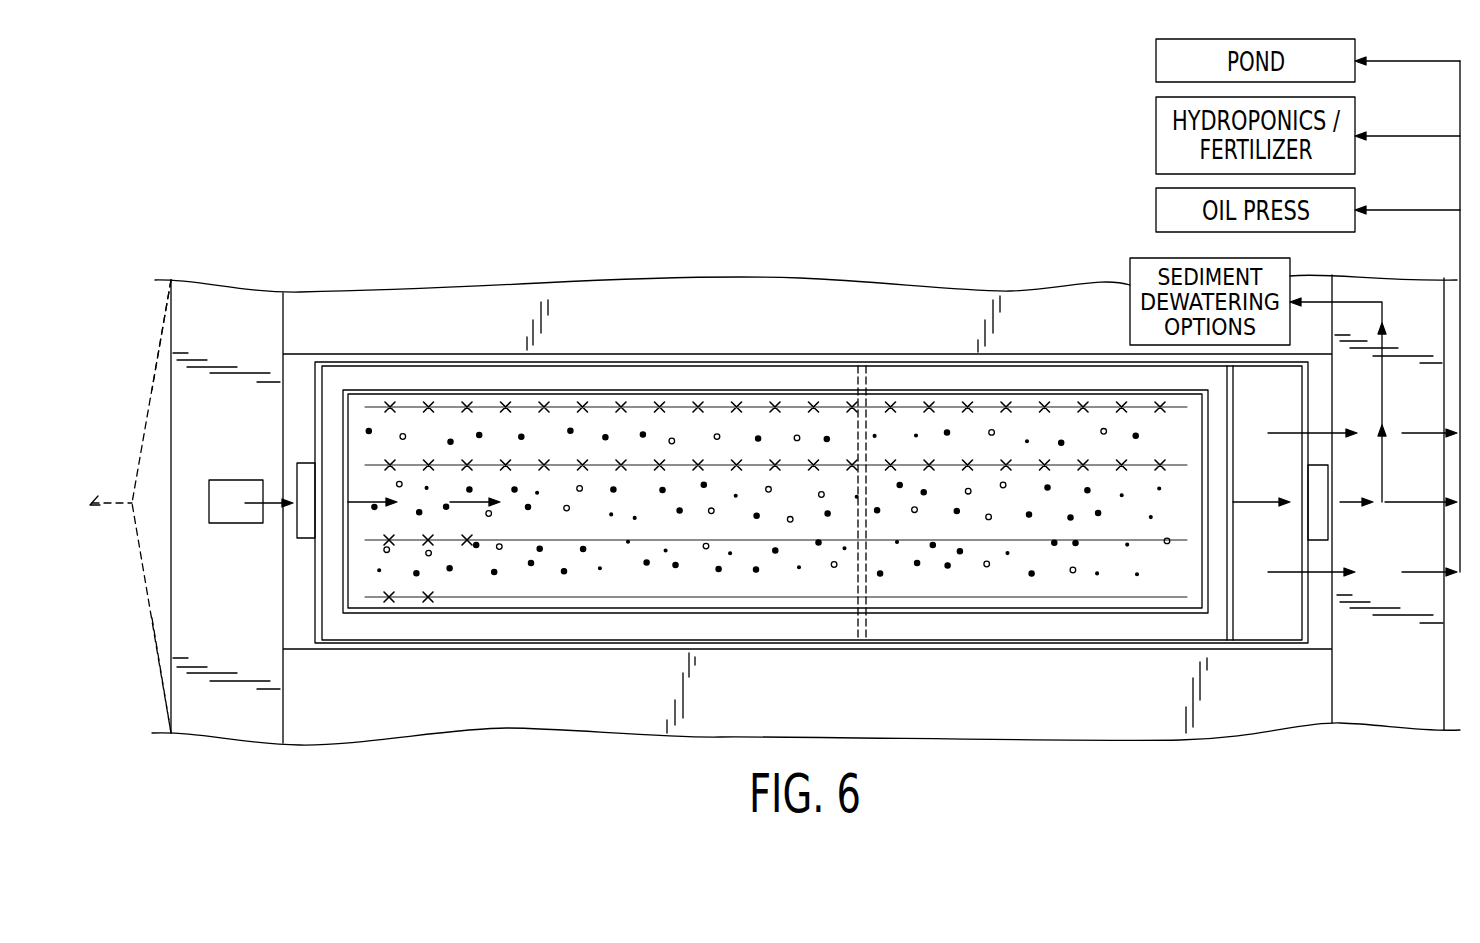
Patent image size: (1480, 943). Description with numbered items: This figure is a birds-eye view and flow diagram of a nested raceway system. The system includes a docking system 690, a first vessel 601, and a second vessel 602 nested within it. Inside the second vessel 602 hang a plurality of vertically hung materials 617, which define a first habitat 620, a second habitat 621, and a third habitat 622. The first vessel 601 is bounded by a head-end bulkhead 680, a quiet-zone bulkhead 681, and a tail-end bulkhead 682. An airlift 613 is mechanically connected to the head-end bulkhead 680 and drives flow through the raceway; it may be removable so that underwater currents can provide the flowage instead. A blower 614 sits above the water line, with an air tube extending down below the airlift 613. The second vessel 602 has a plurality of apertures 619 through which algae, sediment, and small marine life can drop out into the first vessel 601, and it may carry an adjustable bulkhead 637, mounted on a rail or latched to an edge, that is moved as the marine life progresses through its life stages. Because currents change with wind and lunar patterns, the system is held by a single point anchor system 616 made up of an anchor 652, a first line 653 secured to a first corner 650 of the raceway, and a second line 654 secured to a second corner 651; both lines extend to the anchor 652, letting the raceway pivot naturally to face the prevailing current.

The first vessel 601 is at (548, 641).
The second vessel 602 is at (468, 613).
The airlift 613 is at (300, 473).
The blower 614 is at (228, 515).
The single point anchor system 616 is at (134, 506).
The plurality of vertically hung materials 617 is at (700, 408).
The plurality of apertures 619 is at (487, 437).
The first habitat 620 is at (785, 378).
The second habitat 621 is at (957, 423).
The third habitat 622 is at (1172, 497).
The adjustable bulkhead 637 is at (857, 427).
The first corner 650 is at (172, 280).
The second corner 651 is at (172, 733).
The anchor 652 is at (95, 500).
The first line 653 is at (152, 390).
The second line 654 is at (152, 618).
The head-end bulkhead 680 is at (318, 363).
The quiet-zone bulkhead 681 is at (1232, 607).
The tail-end bulkhead 682 is at (1302, 610).
The docking system 690 is at (387, 724).